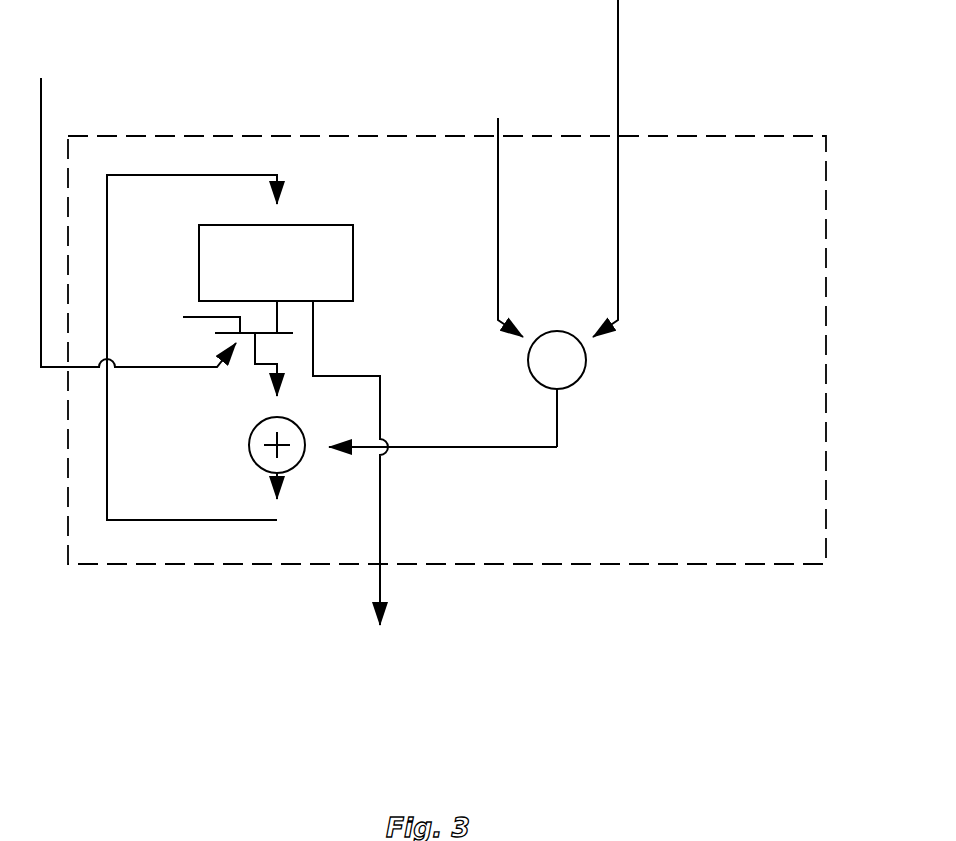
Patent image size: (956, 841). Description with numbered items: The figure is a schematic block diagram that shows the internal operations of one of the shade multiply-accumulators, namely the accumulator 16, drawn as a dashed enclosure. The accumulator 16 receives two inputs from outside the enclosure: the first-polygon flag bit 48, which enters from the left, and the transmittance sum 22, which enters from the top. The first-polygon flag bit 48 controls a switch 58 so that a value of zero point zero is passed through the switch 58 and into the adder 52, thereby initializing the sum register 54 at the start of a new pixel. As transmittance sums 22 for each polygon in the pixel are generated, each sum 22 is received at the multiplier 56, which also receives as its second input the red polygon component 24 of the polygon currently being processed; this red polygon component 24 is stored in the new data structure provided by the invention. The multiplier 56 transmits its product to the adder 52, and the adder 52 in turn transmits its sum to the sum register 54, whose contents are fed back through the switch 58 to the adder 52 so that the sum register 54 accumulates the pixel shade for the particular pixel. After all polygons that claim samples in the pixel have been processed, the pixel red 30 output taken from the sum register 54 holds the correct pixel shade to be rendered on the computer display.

The accumulator 16 is at (826, 353).
The transmittance sum 22 is at (773, 243).
The red polygon component 24 is at (592, 113).
The pixel red 30 is at (418, 703).
The first-polygon flag bit 48 is at (113, 103).
The adder 52 is at (247, 447).
The sum register 54 is at (355, 282).
The multiplier 56 is at (587, 362).
The switch 58 is at (220, 338).